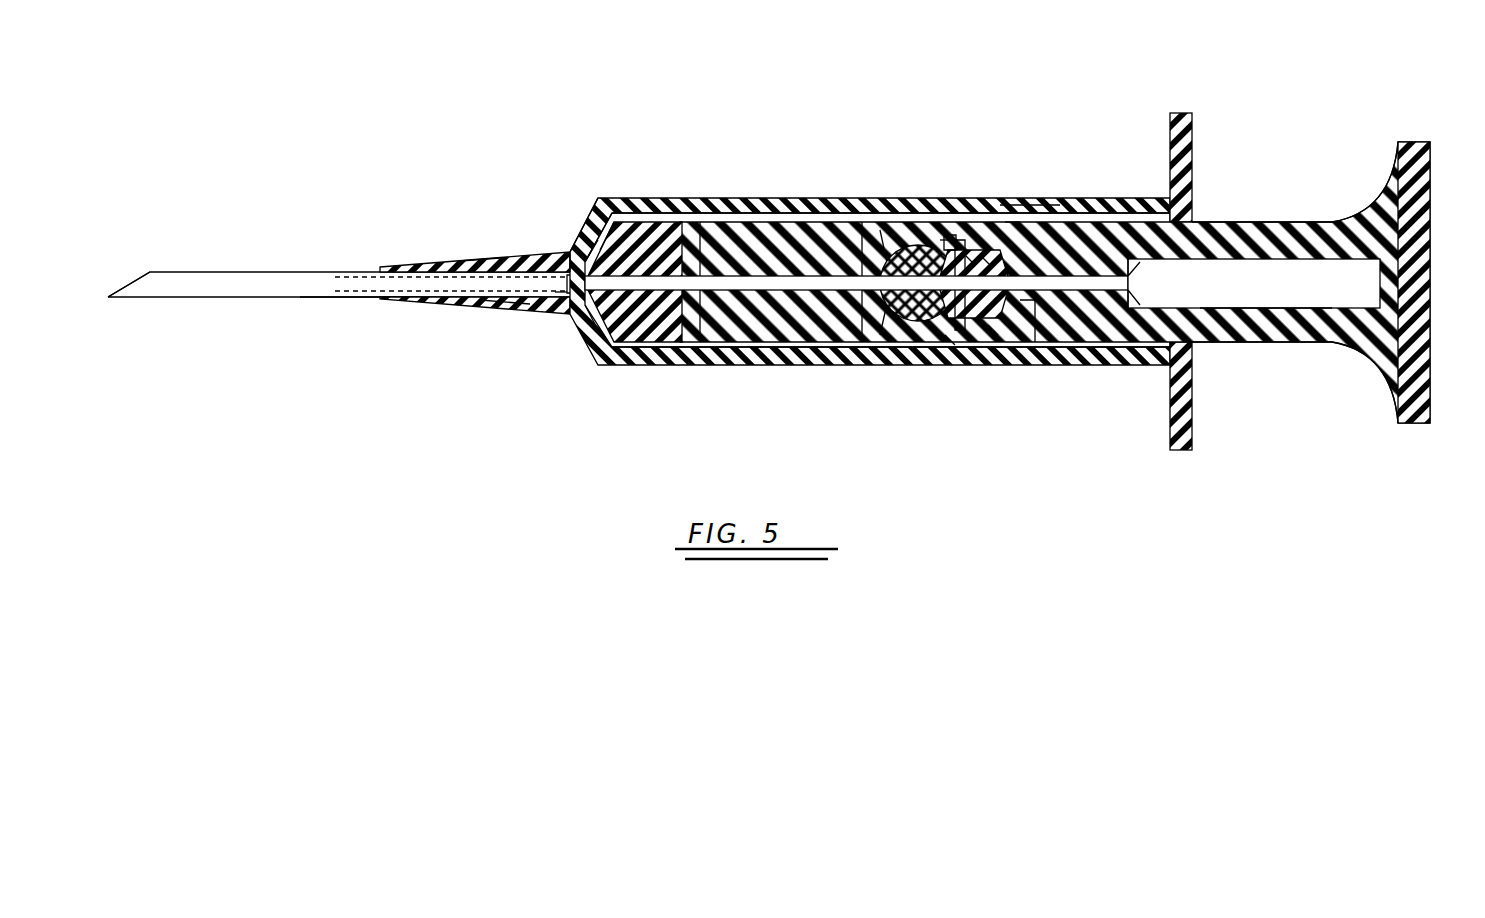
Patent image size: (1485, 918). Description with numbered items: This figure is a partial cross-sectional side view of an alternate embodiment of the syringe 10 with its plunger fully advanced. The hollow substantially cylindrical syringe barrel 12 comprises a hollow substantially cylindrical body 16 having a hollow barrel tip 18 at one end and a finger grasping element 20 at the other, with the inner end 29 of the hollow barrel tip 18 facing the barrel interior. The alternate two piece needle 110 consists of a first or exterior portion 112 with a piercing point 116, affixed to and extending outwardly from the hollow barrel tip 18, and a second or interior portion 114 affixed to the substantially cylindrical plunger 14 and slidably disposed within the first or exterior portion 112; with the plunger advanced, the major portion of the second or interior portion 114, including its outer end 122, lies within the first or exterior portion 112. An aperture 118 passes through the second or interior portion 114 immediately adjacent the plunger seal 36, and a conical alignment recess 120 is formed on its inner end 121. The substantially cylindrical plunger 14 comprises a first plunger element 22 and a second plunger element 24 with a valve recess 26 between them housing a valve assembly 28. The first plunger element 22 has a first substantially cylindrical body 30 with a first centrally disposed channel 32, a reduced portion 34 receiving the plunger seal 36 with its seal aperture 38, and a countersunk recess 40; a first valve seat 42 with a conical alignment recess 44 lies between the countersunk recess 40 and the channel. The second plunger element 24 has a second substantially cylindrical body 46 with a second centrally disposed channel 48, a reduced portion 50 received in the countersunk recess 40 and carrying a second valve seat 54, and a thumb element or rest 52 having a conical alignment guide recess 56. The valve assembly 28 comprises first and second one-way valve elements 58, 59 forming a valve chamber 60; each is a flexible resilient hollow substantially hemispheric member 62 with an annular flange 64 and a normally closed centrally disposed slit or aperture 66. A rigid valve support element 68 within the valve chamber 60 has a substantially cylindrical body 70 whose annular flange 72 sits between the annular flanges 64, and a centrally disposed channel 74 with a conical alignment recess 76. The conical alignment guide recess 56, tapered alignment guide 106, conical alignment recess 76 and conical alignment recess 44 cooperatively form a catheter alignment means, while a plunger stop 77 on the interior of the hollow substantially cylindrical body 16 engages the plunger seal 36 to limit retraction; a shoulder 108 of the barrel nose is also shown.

The syringe 10 is at (768, 190).
The hollow substantially cylindrical syringe barrel 12 is at (871, 255).
The substantially cylindrical plunger 14 is at (1020, 247).
The hollow substantially cylindrical body 16 is at (787, 215).
The hollow barrel tip 18 is at (475, 263).
The finger grasping element 20 is at (1184, 113).
The first plunger element 22 is at (752, 208).
The second plunger element 24 is at (1212, 210).
The valve recess 26 is at (1007, 247).
The valve assembly 28 is at (1000, 235).
The inner end of the hollow barrel tip 29 is at (570, 250).
The first substantially cylindrical body 30 is at (728, 345).
The first centrally disposed channel 32 is at (775, 300).
The reduced portion 34 is at (652, 212).
The plunger seal 36 is at (600, 238).
The seal aperture 38 is at (567, 292).
The countersunk recess 40 is at (953, 247).
The first valve seat 42 is at (890, 345).
The conical alignment recess 44 is at (862, 300).
The second substantially cylindrical body 46 is at (1282, 330).
The second centrally disposed channel 48 is at (1322, 287).
The reduced portion 50 is at (1027, 345).
The thumb element or rest 52 is at (1415, 142).
The second valve seat 54 is at (1012, 222).
The conical alignment guide recess 56 is at (1412, 250).
The first one-way valve element 58 is at (958, 250).
The second one-way valve element 59 is at (992, 345).
The valve chamber 60 is at (950, 235).
The flexible resilient hollow substantially hemispheric member 62 is at (895, 240).
The annular flange 64 is at (940, 345).
The normally closed centrally disposed slit or aperture 66 is at (870, 240).
The rigid valve support element 68 is at (957, 345).
The substantially cylindrical body 70 is at (985, 260).
The annular flange 72 is at (950, 345).
The centrally disposed channel 74 is at (970, 260).
The conical alignment recess 76 is at (1028, 205).
The plunger stop 77 is at (948, 240).
The tapered alignment guide 106 is at (1146, 293).
The nose shoulder 108 is at (595, 350).
The two piece needle 110 is at (485, 248).
The first or exterior portion 112 is at (315, 293).
The second or interior portion 114 is at (375, 297).
The piercing point 116 is at (140, 290).
The aperture 118 is at (517, 303).
The conical alignment recess 120 is at (672, 345).
The inner end 121 is at (602, 205).
The outer end 122 is at (330, 270).